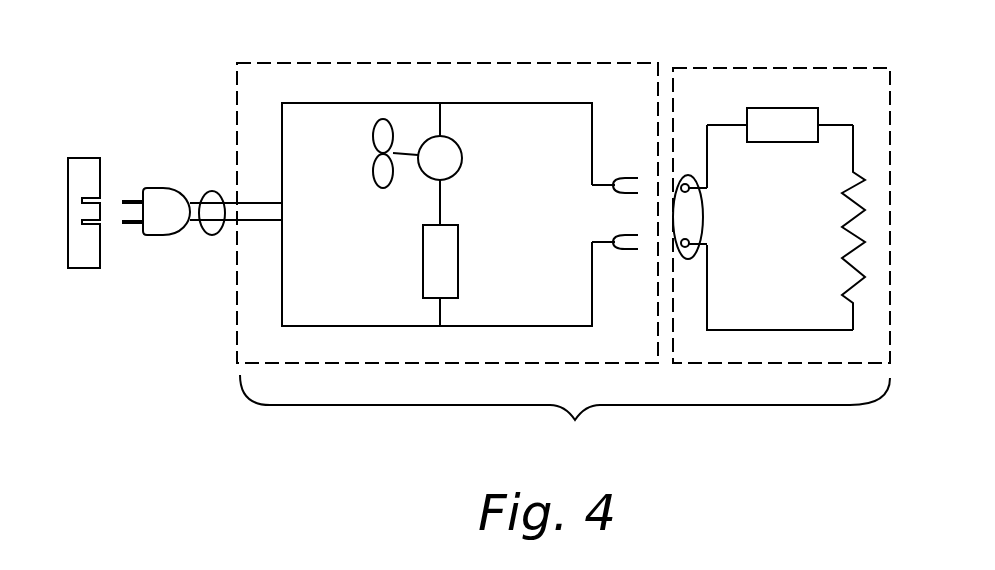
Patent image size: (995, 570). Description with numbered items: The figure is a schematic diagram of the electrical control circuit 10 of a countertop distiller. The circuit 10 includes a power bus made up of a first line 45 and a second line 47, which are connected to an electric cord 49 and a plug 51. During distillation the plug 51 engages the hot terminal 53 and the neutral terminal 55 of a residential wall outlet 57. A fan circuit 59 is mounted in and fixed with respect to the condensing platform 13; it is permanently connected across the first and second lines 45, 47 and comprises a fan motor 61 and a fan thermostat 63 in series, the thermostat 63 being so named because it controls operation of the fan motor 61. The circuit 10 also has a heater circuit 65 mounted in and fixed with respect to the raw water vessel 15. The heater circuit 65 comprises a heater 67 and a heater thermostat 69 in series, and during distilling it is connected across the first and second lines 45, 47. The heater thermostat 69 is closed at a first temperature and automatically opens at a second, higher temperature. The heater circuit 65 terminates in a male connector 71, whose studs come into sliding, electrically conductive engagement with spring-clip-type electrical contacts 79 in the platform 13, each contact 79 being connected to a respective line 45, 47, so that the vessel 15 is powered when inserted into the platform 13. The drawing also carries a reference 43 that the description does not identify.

The control circuit 10 is at (565, 414).
The condensing platform 13 is at (448, 63).
The raw water vessel 15 is at (718, 68).
The control housing 43 is at (252, 308).
The first line 45 is at (347, 103).
The second line 47 is at (302, 326).
The electric cord 49 is at (212, 191).
The plug 51 is at (158, 235).
The hot terminal 53 is at (87, 200).
The neutral terminal 55 is at (85, 222).
The residential wall outlet 57 is at (68, 173).
The fan circuit 59 is at (440, 200).
The fan motor 61 is at (462, 146).
The fan thermostat 63 is at (458, 272).
The heater circuit 65 is at (752, 330).
The heater 67 is at (842, 259).
The heater thermostat 69 is at (797, 142).
The male connector 71 is at (688, 259).
The spring-clip-type electrical contact 79 is at (630, 233).